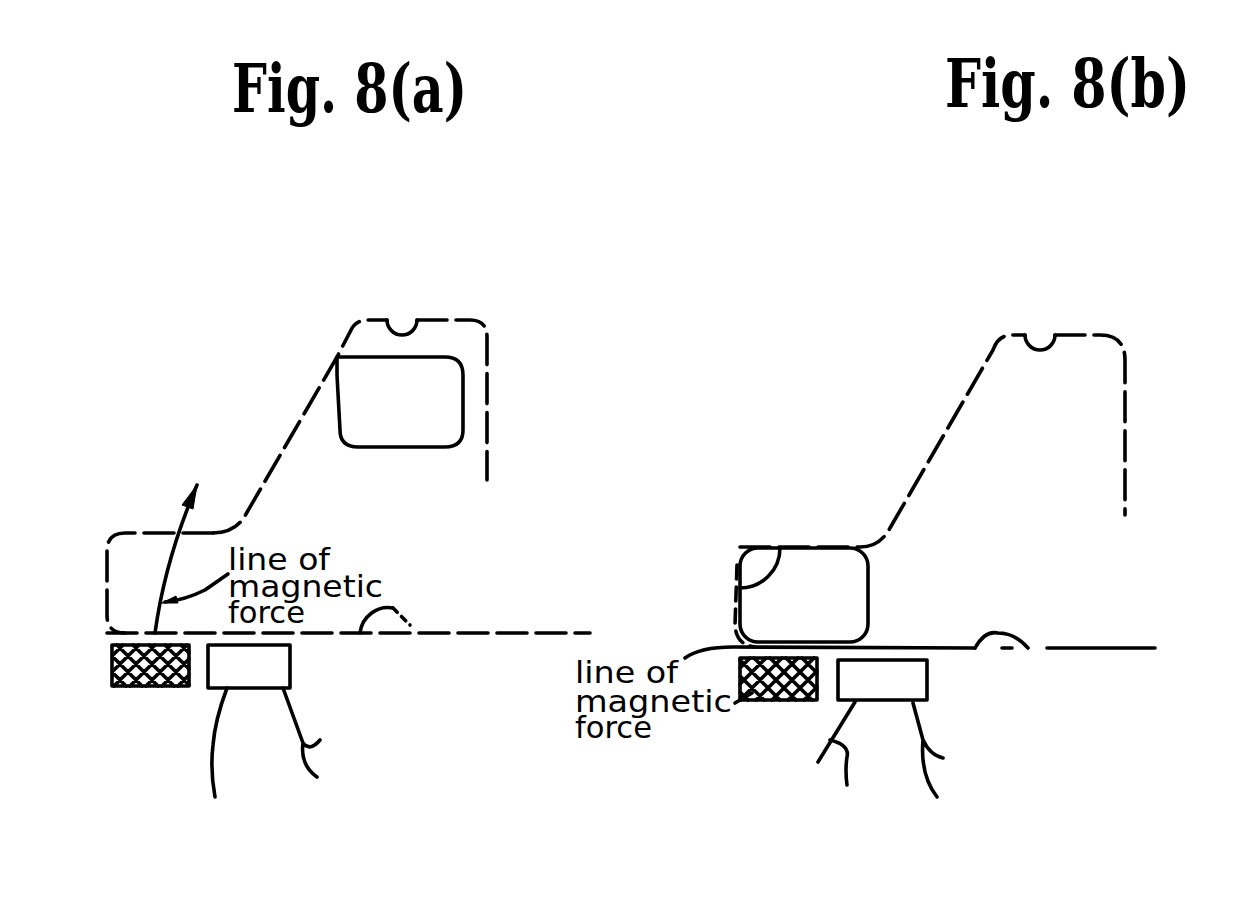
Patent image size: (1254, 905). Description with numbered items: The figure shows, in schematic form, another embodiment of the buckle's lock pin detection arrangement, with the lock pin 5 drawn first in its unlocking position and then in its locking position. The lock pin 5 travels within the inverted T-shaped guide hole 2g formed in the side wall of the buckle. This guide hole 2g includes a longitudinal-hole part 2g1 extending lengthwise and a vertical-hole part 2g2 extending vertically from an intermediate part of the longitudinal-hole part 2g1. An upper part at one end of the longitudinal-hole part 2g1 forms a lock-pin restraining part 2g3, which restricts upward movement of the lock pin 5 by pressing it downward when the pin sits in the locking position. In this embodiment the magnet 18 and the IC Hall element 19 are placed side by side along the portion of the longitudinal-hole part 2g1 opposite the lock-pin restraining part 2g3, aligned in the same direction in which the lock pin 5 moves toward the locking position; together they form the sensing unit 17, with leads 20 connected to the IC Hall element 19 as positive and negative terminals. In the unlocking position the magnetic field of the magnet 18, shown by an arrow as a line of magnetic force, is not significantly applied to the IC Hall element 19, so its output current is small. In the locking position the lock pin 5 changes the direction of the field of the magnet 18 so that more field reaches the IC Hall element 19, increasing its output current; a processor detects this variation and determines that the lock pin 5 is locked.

In FIG. 8A, the inverted T-shaped guide hole 2g is at (300, 493).
In FIG. 8B, the inverted T-shaped guide hole 2g is at (982, 470).
In FIG. 8A, the longitudinal-hole part 2g1 is at (415, 635).
In FIG. 8B, the longitudinal-hole part 2g1 is at (1028, 648).
In FIG. 8A, the vertical-hole part 2g2 is at (417, 320).
In FIG. 8B, the vertical-hole part 2g2 is at (1057, 330).
In FIG. 8A, the lock-pin restraining part 2g3 is at (217, 540).
In FIG. 8B, the lock-pin restraining part 2g3 is at (742, 592).
In FIG. 8A, the lock pin 5 is at (392, 437).
In FIG. 8B, the lock pin 5 is at (862, 593).
In FIG. 8A, the electromagnet 17 is at (170, 738).
In FIG. 8B, the electromagnet 17 is at (807, 756).
In FIG. 8A, the magnet 18 is at (125, 688).
In FIG. 8B, the magnet 18 is at (750, 700).
In FIG. 8A, the IC Hall element 19 is at (220, 672).
In FIG. 8B, the IC Hall element 19 is at (845, 690).
In FIG. 8A, the lead wires (+/-) 20 is at (270, 758).
In FIG. 8B, the lead wires (+/-) 20 is at (889, 769).